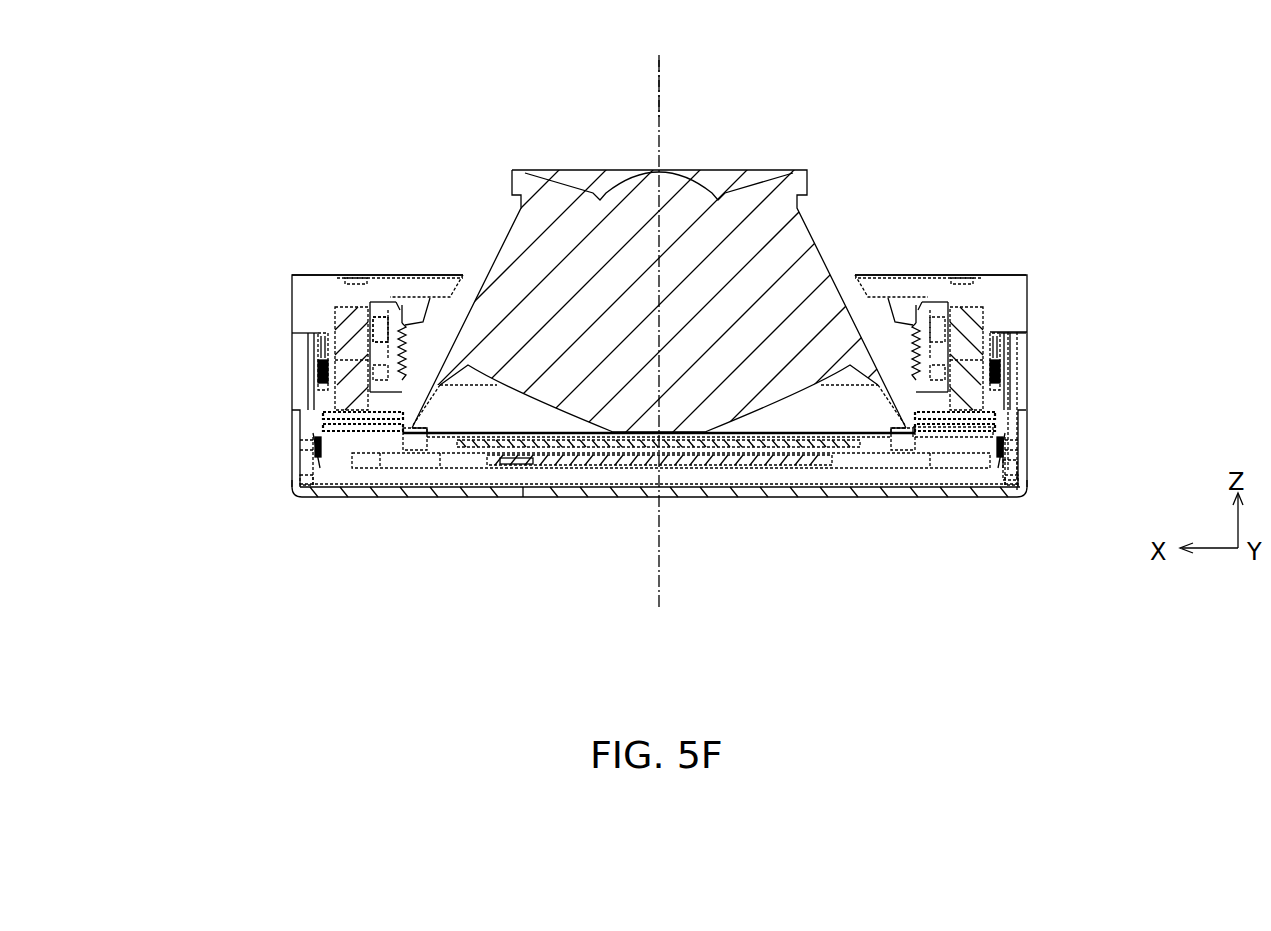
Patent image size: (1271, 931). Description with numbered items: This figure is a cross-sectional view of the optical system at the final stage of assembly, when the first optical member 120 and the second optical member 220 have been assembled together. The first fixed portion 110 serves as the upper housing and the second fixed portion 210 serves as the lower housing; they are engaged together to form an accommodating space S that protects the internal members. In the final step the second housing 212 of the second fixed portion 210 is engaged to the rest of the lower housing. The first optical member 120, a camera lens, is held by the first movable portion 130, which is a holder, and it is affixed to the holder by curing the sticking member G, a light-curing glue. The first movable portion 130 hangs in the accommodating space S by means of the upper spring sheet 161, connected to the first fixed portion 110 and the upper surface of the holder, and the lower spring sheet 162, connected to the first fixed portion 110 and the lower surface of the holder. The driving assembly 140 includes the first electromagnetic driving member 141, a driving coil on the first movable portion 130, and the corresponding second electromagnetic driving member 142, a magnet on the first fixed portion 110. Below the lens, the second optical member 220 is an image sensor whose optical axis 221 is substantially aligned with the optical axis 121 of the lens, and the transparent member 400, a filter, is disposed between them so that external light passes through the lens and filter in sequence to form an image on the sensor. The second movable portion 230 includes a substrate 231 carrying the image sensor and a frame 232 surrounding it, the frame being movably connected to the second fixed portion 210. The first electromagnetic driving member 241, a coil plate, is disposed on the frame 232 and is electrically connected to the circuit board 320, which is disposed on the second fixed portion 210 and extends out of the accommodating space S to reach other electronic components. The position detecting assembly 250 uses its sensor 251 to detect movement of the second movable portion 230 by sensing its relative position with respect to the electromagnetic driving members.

The first fixed portion 110 is at (1012, 297).
The first optical member 120 is at (752, 245).
The optical axis 121 is at (655, 72).
The first movable portion 130 is at (393, 332).
The driving assembly 140 is at (192, 320).
The first electromagnetic driving member 141 is at (382, 330).
The second electromagnetic driving member 142 is at (348, 385).
The upper spring sheet 161 is at (933, 300).
The lower spring sheet 162 is at (1010, 453).
The second fixed portion 210 is at (398, 497).
The second housing 212 is at (1023, 443).
The second optical member 220 is at (600, 452).
The optical axis 221 is at (665, 455).
The second movable portion 230 is at (523, 490).
The substrate 231 is at (845, 472).
The frame 232 is at (977, 447).
The first electromagnetic driving member 241 is at (330, 417).
The position detecting assembly 250 is at (940, 335).
The sensor 251 is at (927, 420).
The circuit board 320 is at (1022, 413).
The transparent member 400 is at (768, 455).
The sticking member G is at (402, 305).
The accommodating space S is at (1000, 442).